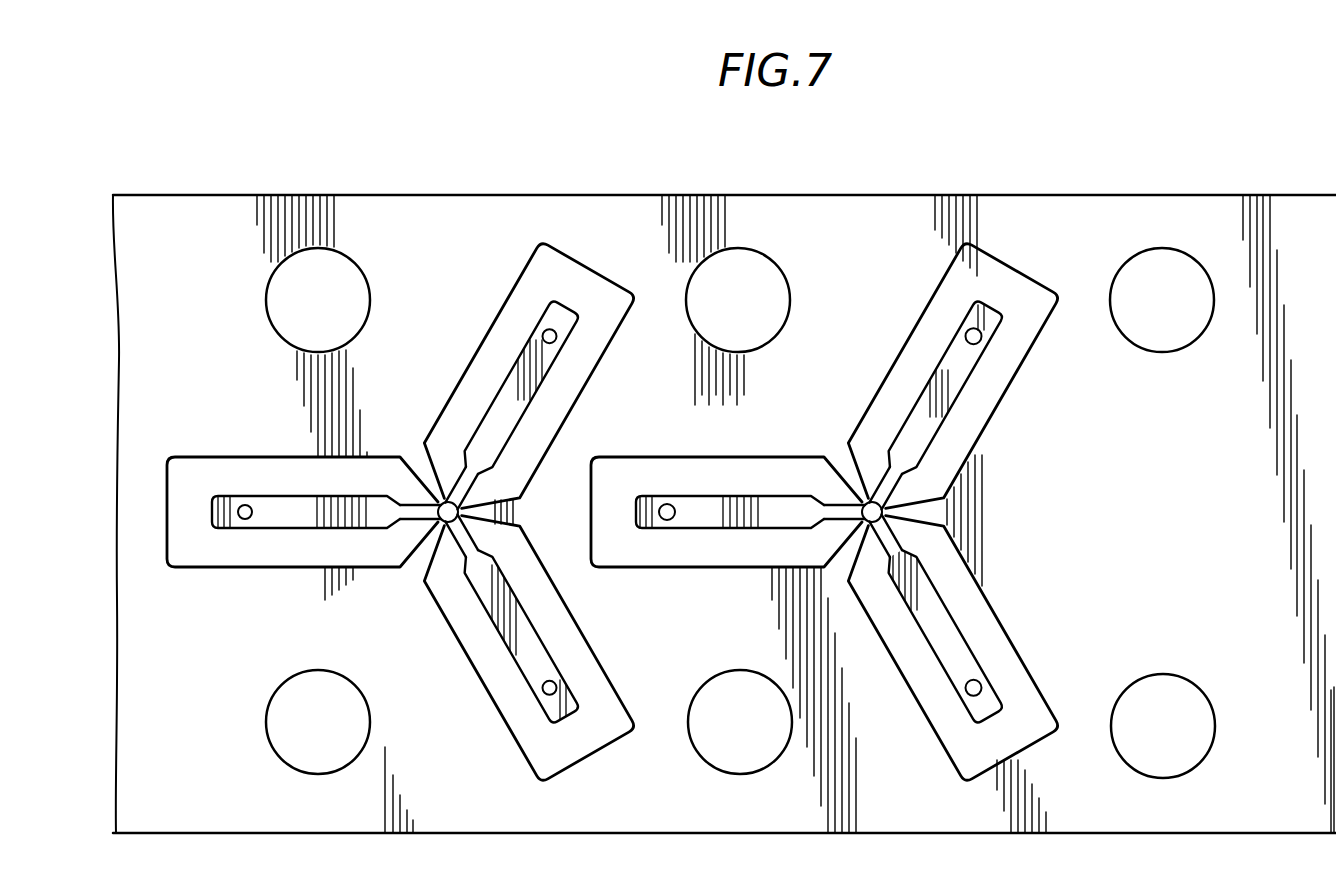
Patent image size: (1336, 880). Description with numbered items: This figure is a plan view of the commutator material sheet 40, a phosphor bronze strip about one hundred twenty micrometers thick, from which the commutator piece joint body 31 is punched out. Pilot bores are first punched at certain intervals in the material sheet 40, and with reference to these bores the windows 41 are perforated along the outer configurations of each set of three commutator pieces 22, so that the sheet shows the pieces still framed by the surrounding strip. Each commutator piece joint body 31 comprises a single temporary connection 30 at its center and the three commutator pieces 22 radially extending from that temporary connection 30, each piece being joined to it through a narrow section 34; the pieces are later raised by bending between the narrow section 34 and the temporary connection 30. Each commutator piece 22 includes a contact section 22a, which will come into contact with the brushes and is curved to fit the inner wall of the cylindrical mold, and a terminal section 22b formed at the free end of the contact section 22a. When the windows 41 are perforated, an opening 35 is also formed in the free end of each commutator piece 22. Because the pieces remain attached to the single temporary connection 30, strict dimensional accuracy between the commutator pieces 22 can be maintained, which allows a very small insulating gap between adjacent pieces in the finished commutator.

The commutator material sheet 40 is at (602, 218).
The windows 41 is at (600, 271).
The commutator piece joint body 31 is at (631, 523).
The temporary connection 30 is at (438, 522).
The commutator piece 22 is at (631, 523).
The contact section 22a is at (298, 515).
The terminal section 22b is at (238, 503).
The narrow section 34 is at (826, 500).
The opening 35 is at (667, 522).